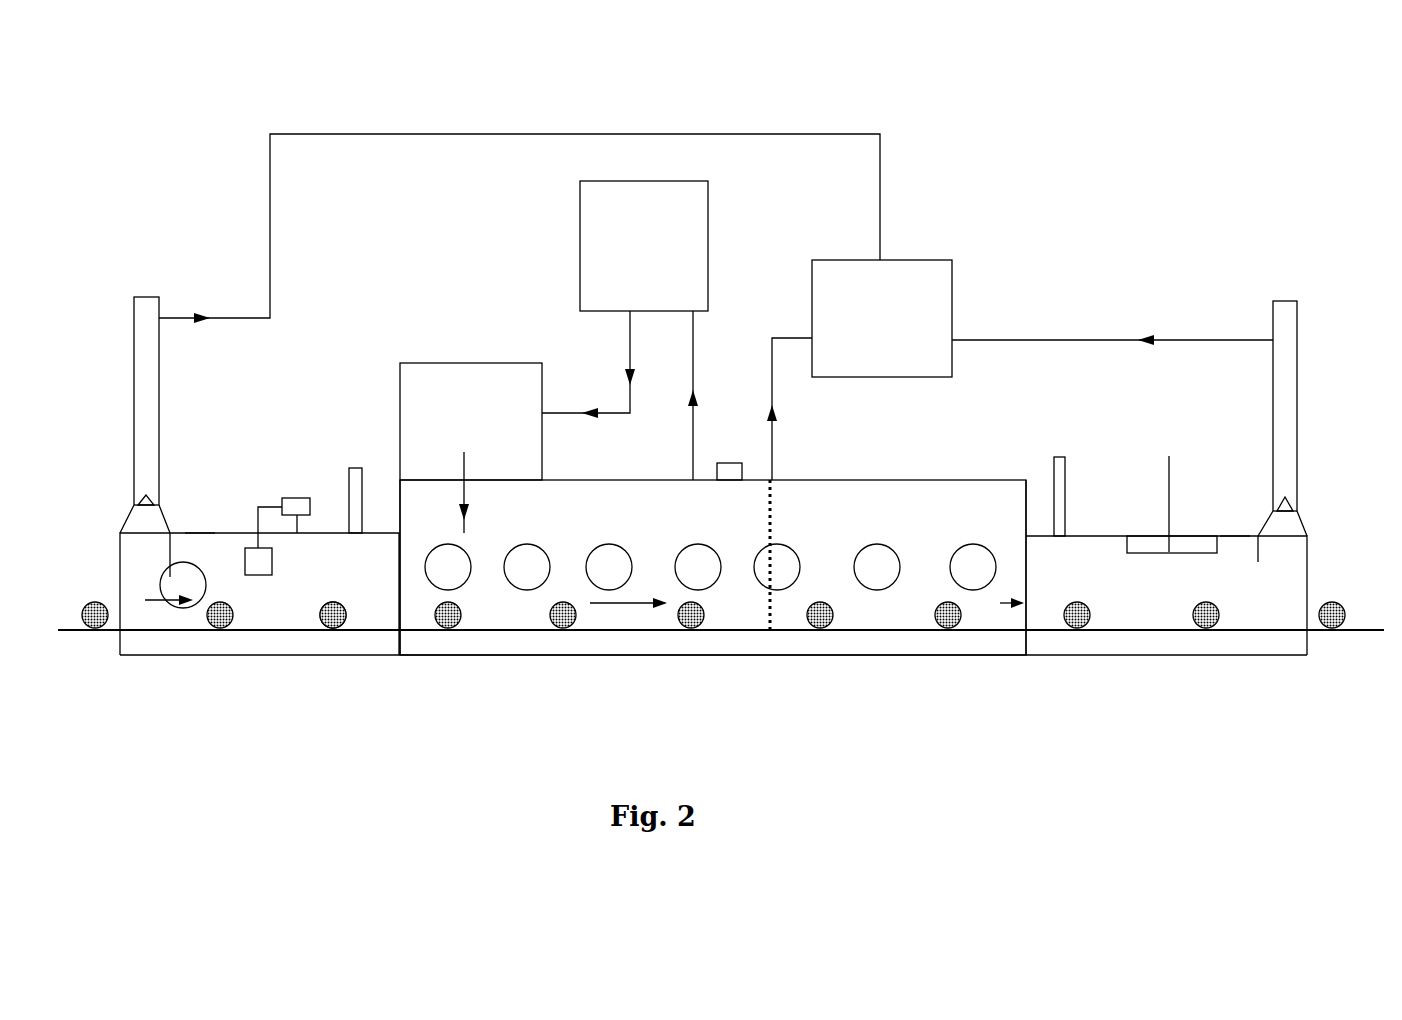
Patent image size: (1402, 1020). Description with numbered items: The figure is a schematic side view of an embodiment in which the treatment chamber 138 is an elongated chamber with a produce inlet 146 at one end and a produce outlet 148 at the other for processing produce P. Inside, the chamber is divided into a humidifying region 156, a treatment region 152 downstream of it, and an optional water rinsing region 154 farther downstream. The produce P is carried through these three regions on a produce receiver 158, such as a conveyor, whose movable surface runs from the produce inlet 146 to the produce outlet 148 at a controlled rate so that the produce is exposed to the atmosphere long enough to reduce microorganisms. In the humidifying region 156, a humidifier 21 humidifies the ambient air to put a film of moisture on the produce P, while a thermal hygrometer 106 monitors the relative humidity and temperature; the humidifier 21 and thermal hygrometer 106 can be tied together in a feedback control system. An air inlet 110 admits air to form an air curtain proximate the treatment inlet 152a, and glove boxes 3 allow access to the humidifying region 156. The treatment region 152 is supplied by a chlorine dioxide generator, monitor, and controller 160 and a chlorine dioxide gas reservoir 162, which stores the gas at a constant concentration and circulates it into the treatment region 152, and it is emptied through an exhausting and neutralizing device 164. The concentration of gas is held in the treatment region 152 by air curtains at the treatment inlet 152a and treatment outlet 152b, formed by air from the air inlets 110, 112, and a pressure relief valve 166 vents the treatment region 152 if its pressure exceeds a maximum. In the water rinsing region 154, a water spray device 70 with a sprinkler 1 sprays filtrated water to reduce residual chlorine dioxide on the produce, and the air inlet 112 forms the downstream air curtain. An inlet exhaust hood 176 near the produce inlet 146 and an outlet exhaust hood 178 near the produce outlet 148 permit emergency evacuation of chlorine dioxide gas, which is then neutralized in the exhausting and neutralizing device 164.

The sprinkler 1 is at (1155, 553).
The glove boxes 3 is at (183, 606).
The humidifier 21 is at (245, 565).
The water spray device 70 is at (1152, 481).
The thermal hygrometer 106 is at (295, 498).
The air inlet 110 is at (354, 468).
The air inlet 112 is at (1066, 474).
The treatment chamber 138 is at (742, 658).
The produce inlet 146 is at (120, 577).
The produce outlet 148 is at (1307, 572).
The treatment region 152 is at (757, 468).
The treatment inlet 152a is at (394, 540).
The treatment outlet 152b is at (1031, 538).
The water rinsing region 154 is at (1233, 532).
The humidifying region 156 is at (200, 532).
The produce receiver 158 is at (75, 633).
The chlorine dioxide generator, monitor, and controller 160 is at (666, 264).
The chlorine dioxide gas reservoir 162 is at (455, 363).
The exhausting and neutralizing device 164 is at (925, 260).
The pressure relief valve 166 is at (728, 463).
The inlet exhaust hood 176 is at (142, 297).
The outlet exhaust hood 178 is at (1280, 301).
The produce P is at (345, 620).